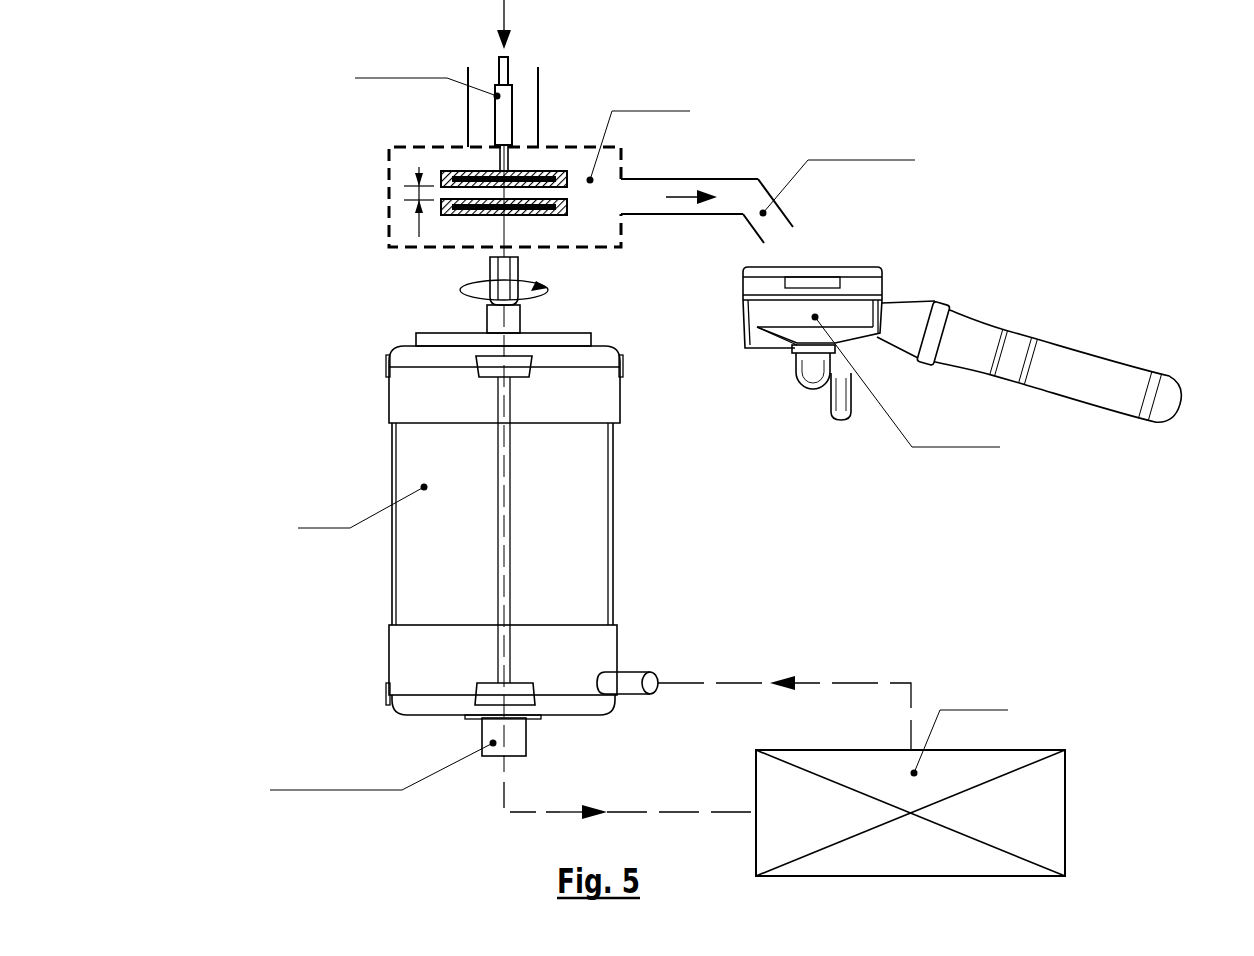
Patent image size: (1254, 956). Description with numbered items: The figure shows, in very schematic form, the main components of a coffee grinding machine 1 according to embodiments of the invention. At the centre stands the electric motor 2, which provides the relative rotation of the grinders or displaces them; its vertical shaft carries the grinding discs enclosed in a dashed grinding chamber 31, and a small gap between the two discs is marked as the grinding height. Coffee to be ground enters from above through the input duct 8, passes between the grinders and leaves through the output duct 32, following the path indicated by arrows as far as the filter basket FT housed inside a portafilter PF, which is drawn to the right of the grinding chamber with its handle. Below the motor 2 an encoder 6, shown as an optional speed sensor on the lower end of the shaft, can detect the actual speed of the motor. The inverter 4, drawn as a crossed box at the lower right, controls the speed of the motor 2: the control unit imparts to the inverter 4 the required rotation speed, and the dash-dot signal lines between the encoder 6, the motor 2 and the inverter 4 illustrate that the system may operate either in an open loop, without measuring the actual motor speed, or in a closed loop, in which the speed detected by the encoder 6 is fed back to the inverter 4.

The coffee grinding machine 1 is at (283, 323).
The electric motor 2 is at (392, 432).
The inverter 4 is at (1065, 817).
The encoder 6 is at (526, 740).
The input duct 8 is at (496, 112).
The grinding chamber 31 is at (525, 75).
The output duct 32 is at (738, 195).
The filter basket FT is at (846, 272).
The portafilter PF is at (1136, 418).